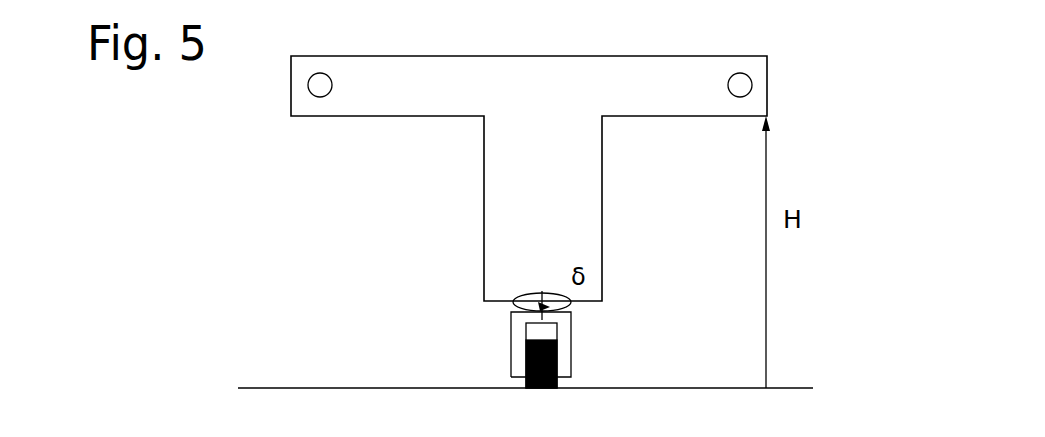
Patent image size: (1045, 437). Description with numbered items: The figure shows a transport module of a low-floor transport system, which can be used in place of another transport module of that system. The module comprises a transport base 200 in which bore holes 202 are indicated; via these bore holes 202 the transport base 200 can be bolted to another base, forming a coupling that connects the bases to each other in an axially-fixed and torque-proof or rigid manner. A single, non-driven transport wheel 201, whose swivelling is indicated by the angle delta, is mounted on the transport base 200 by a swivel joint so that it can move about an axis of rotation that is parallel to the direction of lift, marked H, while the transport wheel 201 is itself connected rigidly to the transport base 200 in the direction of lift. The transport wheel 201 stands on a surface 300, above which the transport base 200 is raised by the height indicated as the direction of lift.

The transport base 200 is at (678, 98).
The transport wheel 201 is at (557, 386).
The bore holes 202 is at (332, 83).
The ground surface 300 is at (800, 387).